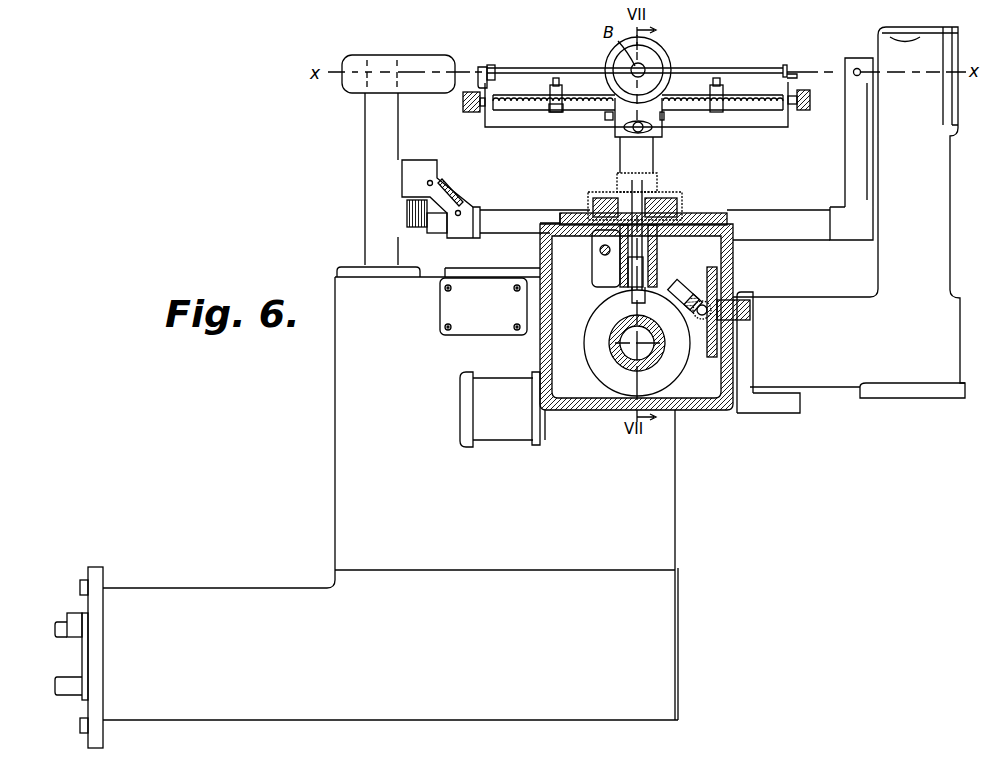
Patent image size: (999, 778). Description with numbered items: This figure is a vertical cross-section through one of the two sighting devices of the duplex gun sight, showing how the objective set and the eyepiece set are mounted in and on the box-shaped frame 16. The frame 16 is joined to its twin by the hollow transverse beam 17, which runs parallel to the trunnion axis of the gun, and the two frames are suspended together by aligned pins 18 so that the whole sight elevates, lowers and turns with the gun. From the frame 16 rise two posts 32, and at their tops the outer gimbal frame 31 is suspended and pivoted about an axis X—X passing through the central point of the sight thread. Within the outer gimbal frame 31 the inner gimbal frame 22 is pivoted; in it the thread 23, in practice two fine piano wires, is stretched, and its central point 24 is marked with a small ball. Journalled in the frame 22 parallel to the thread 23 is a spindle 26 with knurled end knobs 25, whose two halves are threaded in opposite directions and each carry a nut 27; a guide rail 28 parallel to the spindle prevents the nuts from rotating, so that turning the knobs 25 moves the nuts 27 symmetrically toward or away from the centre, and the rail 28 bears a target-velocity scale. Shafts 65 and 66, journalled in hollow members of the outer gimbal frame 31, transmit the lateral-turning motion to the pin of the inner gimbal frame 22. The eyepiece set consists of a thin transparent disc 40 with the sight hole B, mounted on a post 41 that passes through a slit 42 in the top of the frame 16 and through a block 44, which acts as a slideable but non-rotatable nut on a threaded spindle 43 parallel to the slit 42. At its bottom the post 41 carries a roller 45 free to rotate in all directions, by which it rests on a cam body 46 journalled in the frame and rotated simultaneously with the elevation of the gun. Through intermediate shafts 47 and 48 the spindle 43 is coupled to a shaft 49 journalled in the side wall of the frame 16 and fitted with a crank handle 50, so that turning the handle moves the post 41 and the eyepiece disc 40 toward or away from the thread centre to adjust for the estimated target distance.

The frame 16 is at (682, 210).
The hollow transverse beam 17 is at (264, 580).
The pins 18 is at (483, 432).
The frame 22 is at (490, 83).
The thread 23 is at (698, 83).
The central point 24 is at (635, 70).
The knurled end knobs 25 is at (471, 112).
The spindle 26 is at (742, 98).
The nut 27 is at (558, 113).
The guide rail 28 is at (556, 78).
The frame 31 is at (425, 150).
The posts 32 is at (383, 153).
The thin transparent disc 40 is at (655, 56).
The post 41 is at (622, 160).
The slit 42 is at (645, 194).
The threaded spindle 43 is at (600, 251).
The block 44 is at (594, 274).
The roller 45 is at (628, 318).
The cam body 46 is at (655, 355).
The intermediate shaft 47 is at (658, 284).
The intermediate shaft 48 is at (703, 322).
The shaft 49 is at (748, 297).
The crank handle 50 is at (771, 413).
The shaft 65 is at (405, 228).
The shaft 66 is at (436, 233).